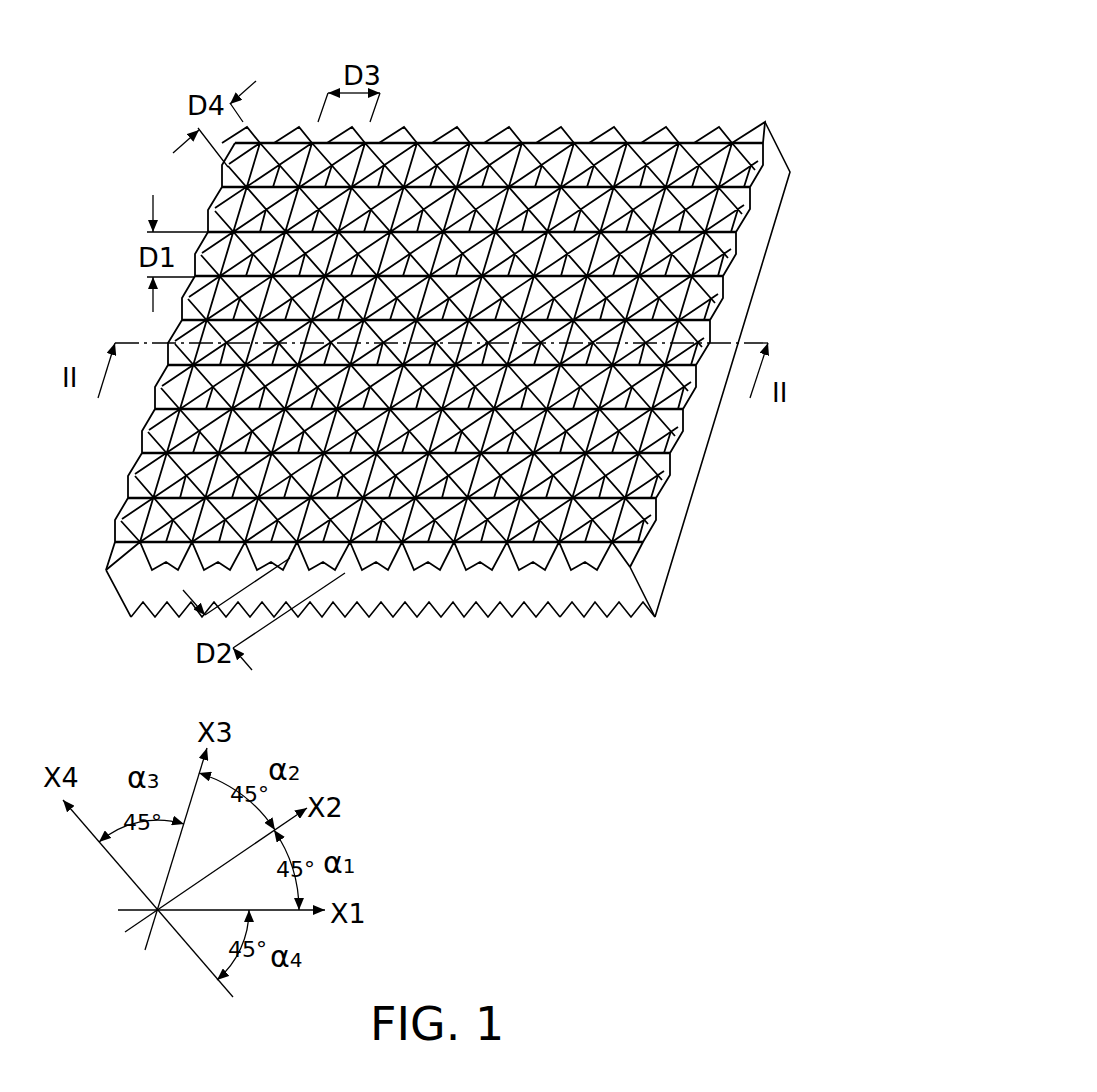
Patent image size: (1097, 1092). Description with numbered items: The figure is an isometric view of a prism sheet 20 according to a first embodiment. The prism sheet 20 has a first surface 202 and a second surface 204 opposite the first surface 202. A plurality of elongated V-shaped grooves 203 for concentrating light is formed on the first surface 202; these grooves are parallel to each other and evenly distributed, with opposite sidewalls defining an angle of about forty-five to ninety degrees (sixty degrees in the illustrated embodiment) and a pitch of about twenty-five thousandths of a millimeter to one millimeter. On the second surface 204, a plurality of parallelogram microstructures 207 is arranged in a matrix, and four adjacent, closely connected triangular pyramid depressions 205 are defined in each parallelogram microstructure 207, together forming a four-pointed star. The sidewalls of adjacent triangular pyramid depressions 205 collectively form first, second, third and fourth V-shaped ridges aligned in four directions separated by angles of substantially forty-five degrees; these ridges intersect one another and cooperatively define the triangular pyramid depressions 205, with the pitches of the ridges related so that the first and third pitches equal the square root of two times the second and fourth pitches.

The prism sheet 20 is at (494, 363).
The first surface 202 is at (497, 620).
The elongated V-shaped grooves 203 is at (597, 603).
The second surface 204 is at (752, 180).
The triangular pyramid depressions 205 is at (677, 268).
The parallelogram microstructures 207 is at (677, 253).